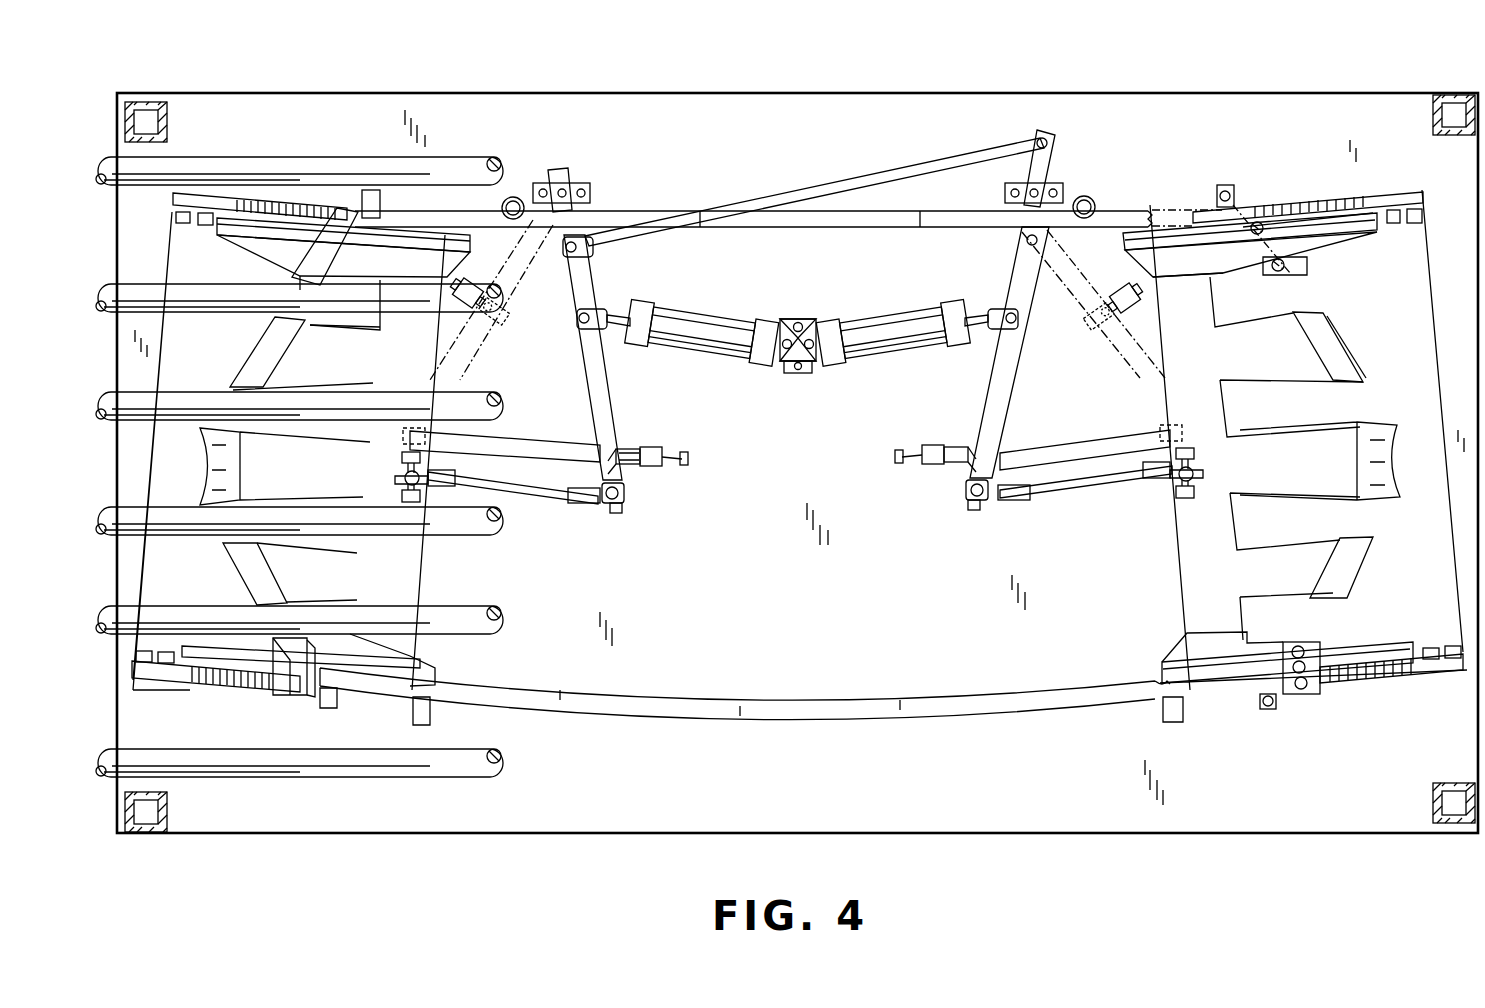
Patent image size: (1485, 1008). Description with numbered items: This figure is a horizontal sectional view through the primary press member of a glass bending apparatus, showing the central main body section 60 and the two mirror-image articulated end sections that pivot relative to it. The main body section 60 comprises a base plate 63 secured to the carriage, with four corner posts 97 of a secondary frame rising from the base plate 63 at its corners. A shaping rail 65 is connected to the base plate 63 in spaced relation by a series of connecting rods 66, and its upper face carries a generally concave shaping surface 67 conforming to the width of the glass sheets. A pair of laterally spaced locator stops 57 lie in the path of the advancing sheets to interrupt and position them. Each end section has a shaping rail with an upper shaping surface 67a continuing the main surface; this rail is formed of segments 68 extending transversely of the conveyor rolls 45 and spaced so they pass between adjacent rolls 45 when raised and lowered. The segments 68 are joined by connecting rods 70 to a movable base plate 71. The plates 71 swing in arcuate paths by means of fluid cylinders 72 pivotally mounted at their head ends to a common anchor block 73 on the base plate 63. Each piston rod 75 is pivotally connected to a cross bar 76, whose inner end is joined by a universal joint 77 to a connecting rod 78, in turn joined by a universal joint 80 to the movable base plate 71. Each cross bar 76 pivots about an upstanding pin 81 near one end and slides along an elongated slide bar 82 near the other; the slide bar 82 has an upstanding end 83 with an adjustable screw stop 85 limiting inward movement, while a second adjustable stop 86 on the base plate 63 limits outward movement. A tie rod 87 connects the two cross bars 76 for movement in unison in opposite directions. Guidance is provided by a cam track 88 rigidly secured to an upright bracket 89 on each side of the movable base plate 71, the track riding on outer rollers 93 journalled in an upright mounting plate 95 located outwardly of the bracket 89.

The conveyor rolls 45 is at (327, 159).
The locator stops 57 is at (513, 197).
The main body section 60 is at (905, 742).
The base plate 63 is at (1128, 834).
The shaping rail 65 is at (622, 210).
The connecting rods 66 is at (1264, 709).
The shaping surface 67 is at (697, 217).
The upper shaping surface 67a is at (242, 552).
The segments 68 is at (300, 325).
The connecting rods 70 is at (1276, 272).
The movable base plate 71 is at (418, 578).
The fluid cylinders 72 is at (696, 316).
The anchor block 73 is at (796, 373).
The piston rod 75 is at (618, 310).
The cross bar 76 is at (614, 400).
The universal joint 77 is at (612, 513).
The connecting rod 78 is at (540, 497).
The universal joint 80 is at (398, 480).
The upstanding pin 81 is at (565, 185).
The slide bar 82 is at (535, 436).
The upstanding end 83 is at (652, 450).
The adjustable screw stop 85 is at (634, 465).
The second adjustable stop 86 is at (458, 306).
The tie rod 87 is at (832, 184).
The cam track 88 is at (462, 235).
The upright bracket 89 is at (268, 236).
The outer rollers 93 is at (202, 226).
The upright mounting plate 95 is at (258, 196).
The corner posts 97 is at (150, 102).